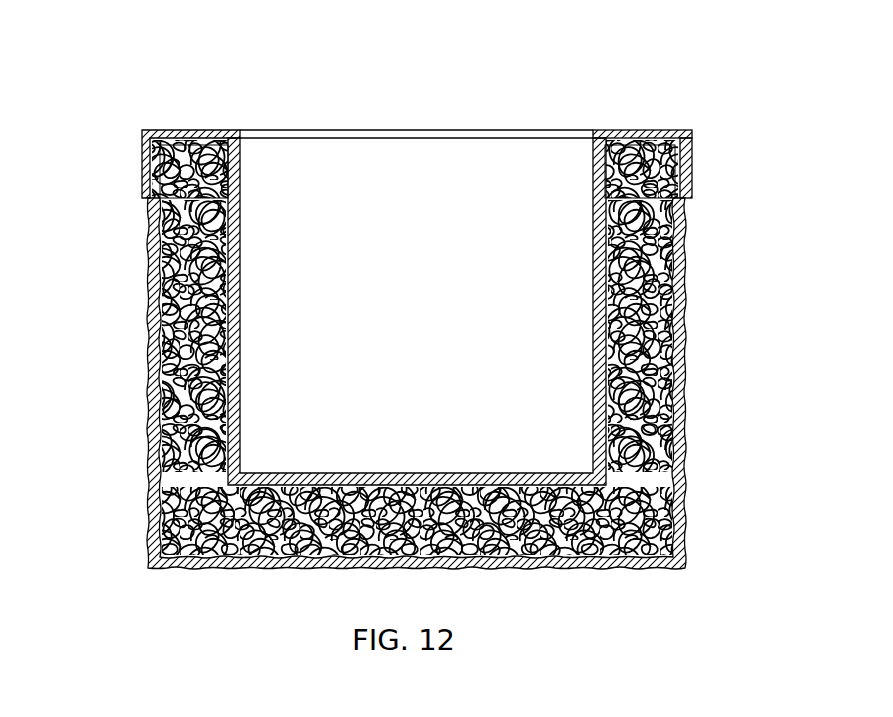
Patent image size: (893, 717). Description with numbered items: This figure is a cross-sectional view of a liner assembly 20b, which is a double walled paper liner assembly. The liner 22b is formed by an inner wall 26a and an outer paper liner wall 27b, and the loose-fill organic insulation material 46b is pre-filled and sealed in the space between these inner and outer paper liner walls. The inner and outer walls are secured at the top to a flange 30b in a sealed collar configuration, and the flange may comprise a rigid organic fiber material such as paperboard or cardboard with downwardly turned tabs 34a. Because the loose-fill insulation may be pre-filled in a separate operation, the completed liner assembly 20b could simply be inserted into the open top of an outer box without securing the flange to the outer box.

The liner assembly 20b is at (704, 265).
The liner 22b is at (148, 357).
The inner wall 26a is at (240, 200).
The outer paper liner wall 27b is at (150, 245).
The flange 30b is at (620, 121).
The downwardly turned tabs 34a is at (692, 167).
The loose-fill organic insulation material 46b is at (680, 380).